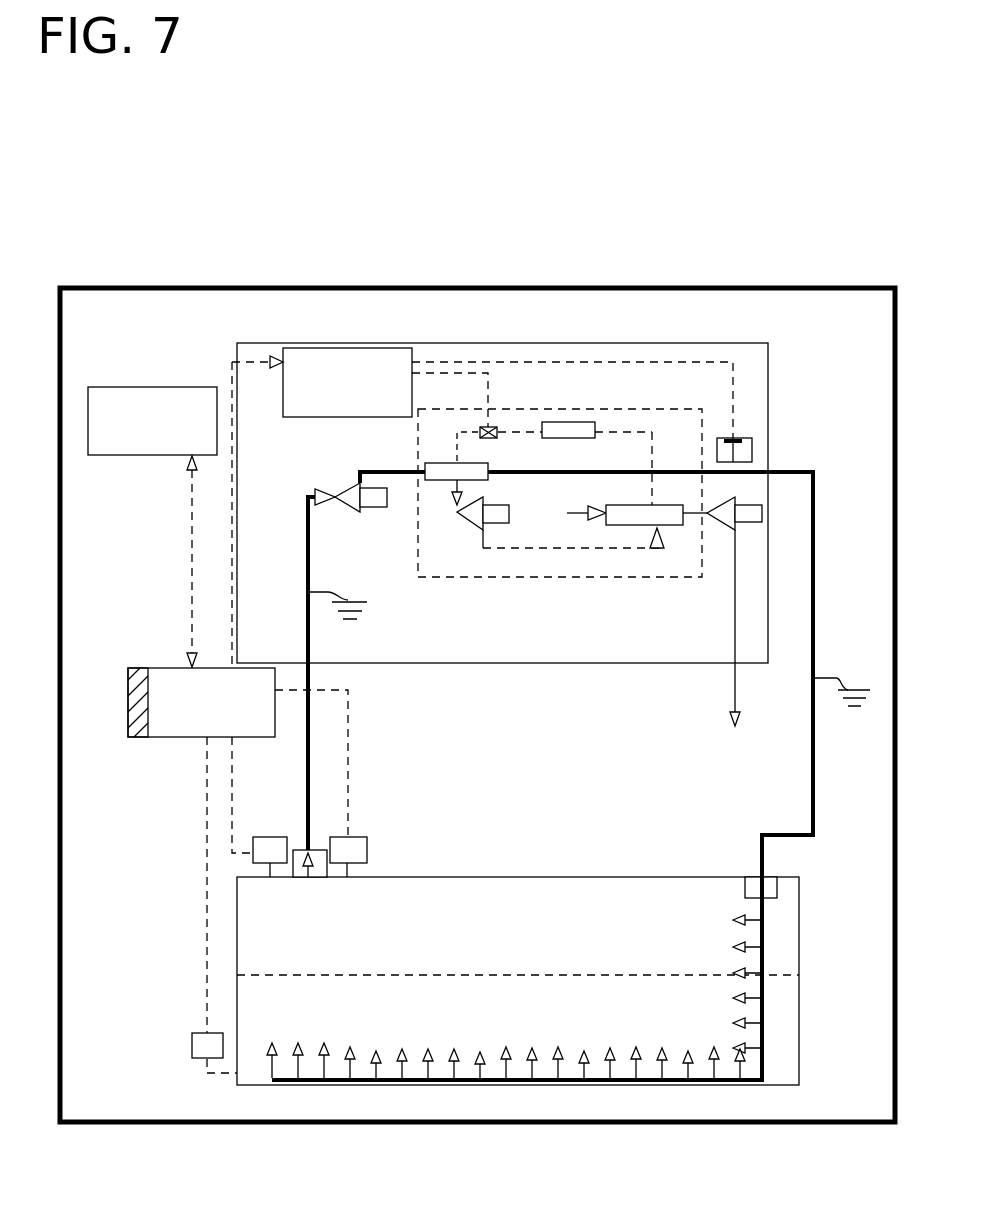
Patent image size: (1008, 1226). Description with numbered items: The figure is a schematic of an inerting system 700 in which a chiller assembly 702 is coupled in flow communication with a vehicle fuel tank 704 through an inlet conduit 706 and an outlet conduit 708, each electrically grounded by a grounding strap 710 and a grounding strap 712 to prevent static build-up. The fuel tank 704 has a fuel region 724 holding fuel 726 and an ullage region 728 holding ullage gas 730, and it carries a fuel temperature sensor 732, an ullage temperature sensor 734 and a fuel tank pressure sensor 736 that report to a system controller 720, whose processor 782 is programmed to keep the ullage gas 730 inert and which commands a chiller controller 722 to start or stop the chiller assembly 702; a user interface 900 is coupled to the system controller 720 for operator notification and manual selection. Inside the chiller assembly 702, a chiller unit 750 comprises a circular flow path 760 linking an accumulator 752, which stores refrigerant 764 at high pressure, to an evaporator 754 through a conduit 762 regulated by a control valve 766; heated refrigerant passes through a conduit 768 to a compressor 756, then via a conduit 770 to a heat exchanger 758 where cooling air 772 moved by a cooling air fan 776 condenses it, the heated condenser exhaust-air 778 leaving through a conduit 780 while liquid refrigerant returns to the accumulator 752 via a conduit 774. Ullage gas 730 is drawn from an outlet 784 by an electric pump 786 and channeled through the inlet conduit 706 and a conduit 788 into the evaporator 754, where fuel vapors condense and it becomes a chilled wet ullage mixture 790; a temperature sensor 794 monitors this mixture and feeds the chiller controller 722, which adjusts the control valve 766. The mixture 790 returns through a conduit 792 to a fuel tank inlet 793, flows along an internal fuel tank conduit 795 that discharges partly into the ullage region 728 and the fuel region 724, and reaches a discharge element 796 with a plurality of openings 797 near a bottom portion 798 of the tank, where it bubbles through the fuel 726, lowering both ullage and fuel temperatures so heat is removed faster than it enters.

The system 700 is at (478, 288).
The chiller assembly 702 is at (770, 370).
The vehicle fuel tank 704 is at (799, 1013).
The inlet conduit 706 is at (308, 548).
The outlet conduit 708 is at (812, 758).
The grounding strap 710 is at (324, 592).
The grounding strap 712 is at (842, 684).
The system controller 720 is at (172, 668).
The chiller controller 722 is at (312, 343).
The fuel region 724 is at (215, 1003).
The fuel 726 is at (474, 1019).
The ullage region 728 is at (215, 937).
The ullage gas 730 is at (474, 942).
The fuel temperature sensor 732 is at (192, 1045).
The ullage temperature sensor 734 is at (253, 856).
The fuel tank pressure sensor 736 is at (358, 837).
The chiller unit 750 is at (543, 409).
The accumulator 752 is at (646, 357).
The evaporator 754 is at (428, 463).
The compressor 756 is at (492, 505).
The heat exchanger 758 is at (642, 505).
The circular flow path 760 is at (482, 572).
The conduit 762 is at (457, 432).
The refrigerant 764 is at (557, 438).
The control valve 766 is at (486, 427).
The conduit 768 is at (453, 500).
The conduit 770 is at (577, 548).
The cooling air 772 is at (578, 513).
The conduit 774 is at (652, 447).
The cooling air fan 776 is at (762, 515).
The condenser exhaust-air 778 is at (705, 598).
The conduit 780 is at (735, 648).
The processor 782 is at (138, 738).
The outlet 784 is at (307, 845).
The electric pump 786 is at (345, 498).
The conduit 788 is at (360, 472).
The chilled wet ullage mixture 790 is at (548, 470).
The conduit 792 is at (810, 472).
The fuel tank inlet 793 is at (746, 878).
The temperature sensor 794 is at (748, 438).
The internal fuel tank conduit 795 is at (750, 916).
The discharge element 796 is at (481, 1085).
The openings 797 is at (563, 1080).
The bottom portion 798 is at (800, 1092).
The user interface 900 is at (198, 387).